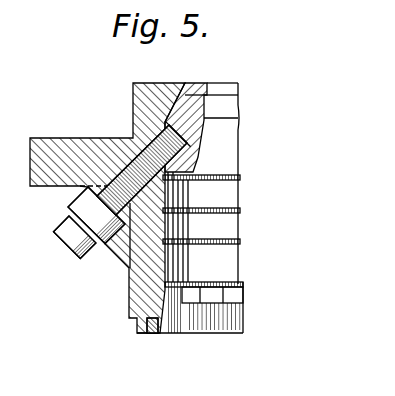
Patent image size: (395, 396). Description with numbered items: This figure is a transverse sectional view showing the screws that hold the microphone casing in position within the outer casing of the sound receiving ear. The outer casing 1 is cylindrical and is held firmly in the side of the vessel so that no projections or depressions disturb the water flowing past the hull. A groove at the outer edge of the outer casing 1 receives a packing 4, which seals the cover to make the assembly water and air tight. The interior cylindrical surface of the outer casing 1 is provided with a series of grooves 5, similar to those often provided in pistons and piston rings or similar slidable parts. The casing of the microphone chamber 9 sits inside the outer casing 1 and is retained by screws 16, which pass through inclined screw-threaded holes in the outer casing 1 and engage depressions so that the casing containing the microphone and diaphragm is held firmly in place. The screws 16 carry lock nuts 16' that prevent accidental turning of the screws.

The outer casing 1 is at (48, 187).
The packing 4 is at (150, 336).
The grooves 5 is at (233, 239).
The microphone casing 9 is at (180, 97).
The screws 16 is at (120, 195).
The lock nuts 16' is at (96, 237).